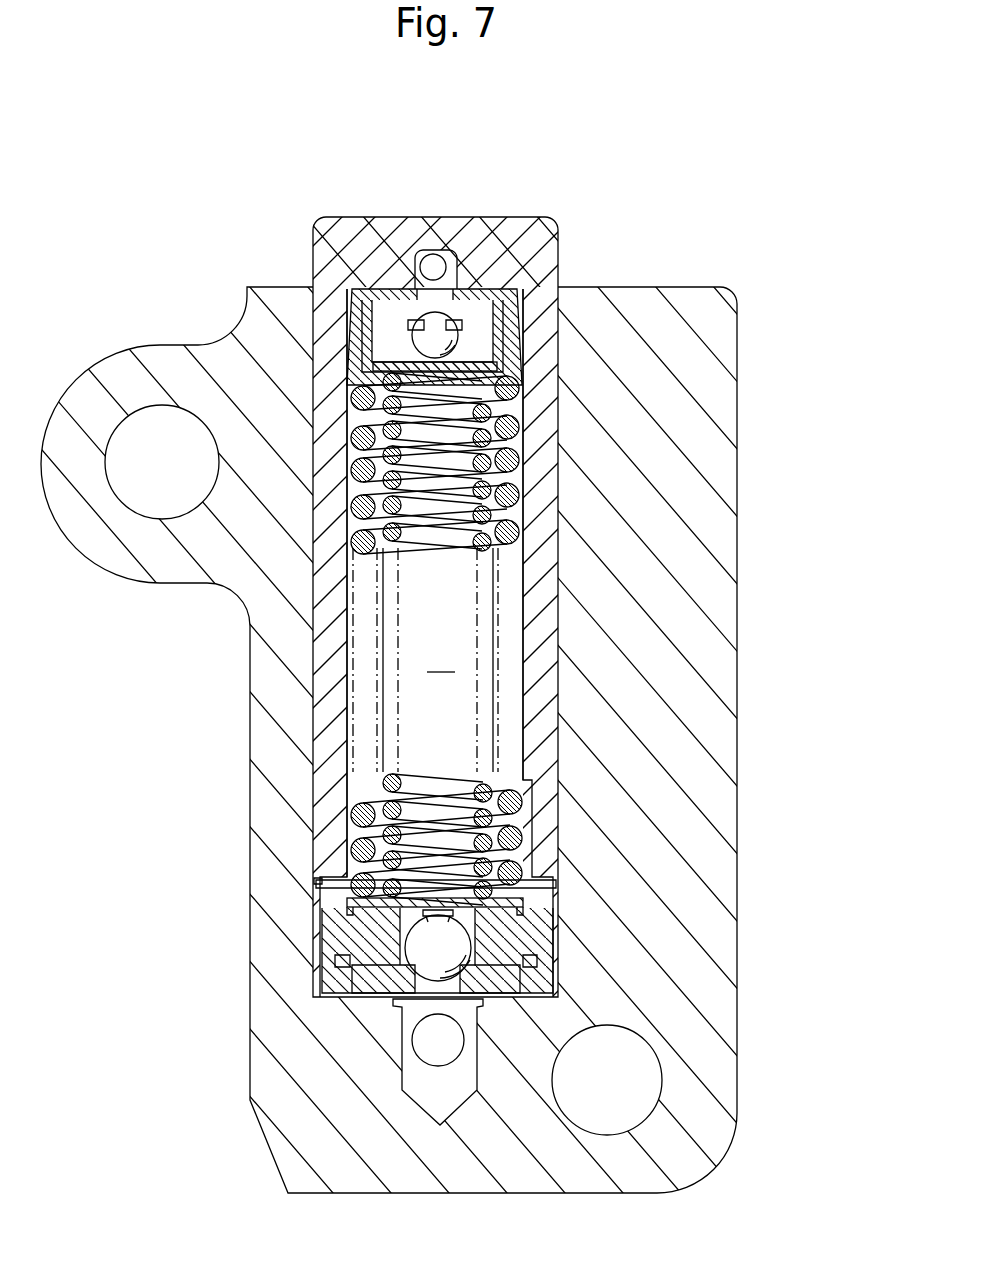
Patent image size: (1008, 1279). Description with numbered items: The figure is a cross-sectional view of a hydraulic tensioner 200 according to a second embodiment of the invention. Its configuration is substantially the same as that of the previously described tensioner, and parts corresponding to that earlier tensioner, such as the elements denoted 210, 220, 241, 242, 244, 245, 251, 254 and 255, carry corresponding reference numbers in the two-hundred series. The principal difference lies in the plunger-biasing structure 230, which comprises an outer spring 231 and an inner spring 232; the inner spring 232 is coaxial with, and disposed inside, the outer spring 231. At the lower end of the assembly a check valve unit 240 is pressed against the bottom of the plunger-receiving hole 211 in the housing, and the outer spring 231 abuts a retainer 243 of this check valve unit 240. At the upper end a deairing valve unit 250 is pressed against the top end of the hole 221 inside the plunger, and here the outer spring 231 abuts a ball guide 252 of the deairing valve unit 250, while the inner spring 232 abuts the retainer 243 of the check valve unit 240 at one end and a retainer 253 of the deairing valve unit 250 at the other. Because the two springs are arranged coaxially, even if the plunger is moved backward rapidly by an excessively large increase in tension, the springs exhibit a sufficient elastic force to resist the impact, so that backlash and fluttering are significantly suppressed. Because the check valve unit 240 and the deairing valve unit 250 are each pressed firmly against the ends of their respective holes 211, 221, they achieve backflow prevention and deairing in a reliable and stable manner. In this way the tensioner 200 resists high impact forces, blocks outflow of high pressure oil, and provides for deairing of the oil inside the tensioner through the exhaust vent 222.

The tensioner 200 is at (581, 181).
The housing 210 is at (277, 960).
The plunger-receiving hole 211 is at (314, 881).
The plunger 220 is at (547, 693).
The hole inside the plunger 221 is at (524, 646).
The exhaust vent 222 is at (433, 254).
The plunger-biasing structure 230 is at (150, 738).
The outer spring 231 is at (386, 812).
The inner spring 232 is at (358, 772).
The check valve unit 240 is at (818, 852).
The valve seat 241 is at (503, 953).
The check ball 242 is at (458, 943).
The retainer 243 is at (455, 913).
The valve seat base 244 is at (505, 1008).
The ball spring 245 is at (520, 932).
The deairing valve unit 250 is at (152, 142).
The relief valve sleeve 251 is at (380, 305).
The ball guide 252 is at (428, 332).
The retainer 253 is at (417, 365).
The relief valve body 254 is at (370, 292).
The ball retainer 255 is at (405, 352).